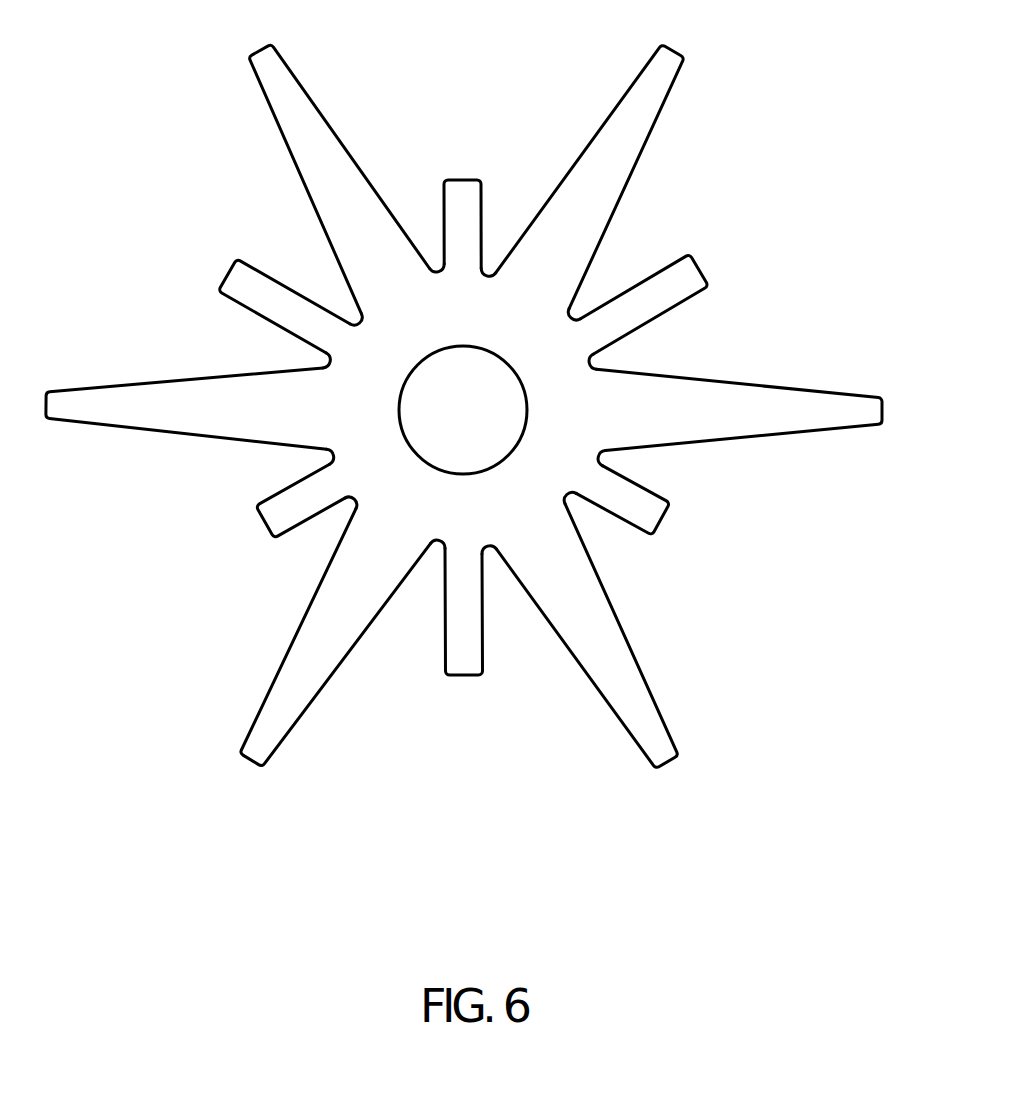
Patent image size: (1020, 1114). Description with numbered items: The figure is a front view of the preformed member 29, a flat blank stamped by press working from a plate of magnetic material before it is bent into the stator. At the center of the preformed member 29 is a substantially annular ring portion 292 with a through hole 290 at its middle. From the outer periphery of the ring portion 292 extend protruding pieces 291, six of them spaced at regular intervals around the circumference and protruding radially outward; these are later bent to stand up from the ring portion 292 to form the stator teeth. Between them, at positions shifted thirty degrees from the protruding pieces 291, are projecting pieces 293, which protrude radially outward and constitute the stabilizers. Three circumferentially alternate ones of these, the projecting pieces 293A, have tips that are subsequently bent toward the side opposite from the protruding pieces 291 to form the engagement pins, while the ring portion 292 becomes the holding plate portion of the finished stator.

The preformed member 29 is at (465, 436).
The through hole 290 is at (400, 404).
The protruding pieces 291 is at (760, 417).
The ring portion 292 is at (378, 475).
The projecting pieces 293 is at (645, 515).
The alternate projecting pieces 293A is at (687, 280).